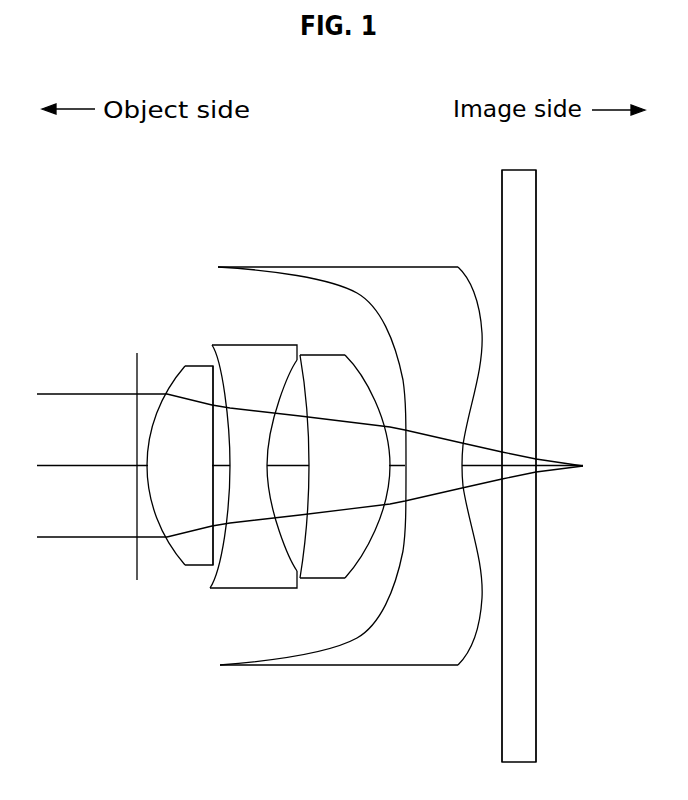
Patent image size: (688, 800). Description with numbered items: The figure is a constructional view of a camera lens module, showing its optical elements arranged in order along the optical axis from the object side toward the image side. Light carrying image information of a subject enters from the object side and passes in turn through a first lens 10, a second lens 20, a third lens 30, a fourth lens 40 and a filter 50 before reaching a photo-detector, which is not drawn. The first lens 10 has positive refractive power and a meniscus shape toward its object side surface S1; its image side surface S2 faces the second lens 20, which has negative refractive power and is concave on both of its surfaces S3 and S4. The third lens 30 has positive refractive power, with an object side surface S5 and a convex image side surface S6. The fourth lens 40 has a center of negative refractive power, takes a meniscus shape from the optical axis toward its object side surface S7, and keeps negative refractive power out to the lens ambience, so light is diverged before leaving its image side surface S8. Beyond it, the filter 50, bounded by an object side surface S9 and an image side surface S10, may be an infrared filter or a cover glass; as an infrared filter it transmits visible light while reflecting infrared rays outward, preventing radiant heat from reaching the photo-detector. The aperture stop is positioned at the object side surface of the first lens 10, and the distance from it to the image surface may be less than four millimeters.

The first lens 10 is at (177, 472).
The second lens 20 is at (257, 466).
The third lens 30 is at (345, 458).
The fourth lens 40 is at (350, 482).
The filter 50 is at (529, 466).
The object side surface of the first lens S1 is at (168, 540).
The image side surface of the first lens S2 is at (218, 547).
The object side surface of the second lens S3 is at (230, 540).
The image side surface of the second lens S4 is at (285, 545).
The object side surface of the third lens S5 is at (303, 540).
The image side surface of the third lens S6 is at (368, 533).
The object side surface of the fourth lens S7 is at (376, 328).
The image side surface of the fourth lens S8 is at (477, 642).
The object side surface of the filter S9 is at (502, 263).
The image side surface of the filter S10 is at (537, 270).